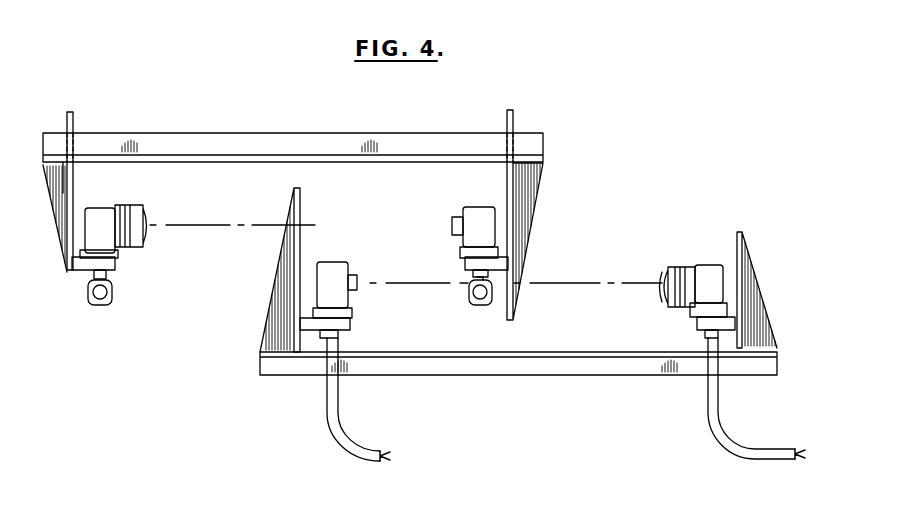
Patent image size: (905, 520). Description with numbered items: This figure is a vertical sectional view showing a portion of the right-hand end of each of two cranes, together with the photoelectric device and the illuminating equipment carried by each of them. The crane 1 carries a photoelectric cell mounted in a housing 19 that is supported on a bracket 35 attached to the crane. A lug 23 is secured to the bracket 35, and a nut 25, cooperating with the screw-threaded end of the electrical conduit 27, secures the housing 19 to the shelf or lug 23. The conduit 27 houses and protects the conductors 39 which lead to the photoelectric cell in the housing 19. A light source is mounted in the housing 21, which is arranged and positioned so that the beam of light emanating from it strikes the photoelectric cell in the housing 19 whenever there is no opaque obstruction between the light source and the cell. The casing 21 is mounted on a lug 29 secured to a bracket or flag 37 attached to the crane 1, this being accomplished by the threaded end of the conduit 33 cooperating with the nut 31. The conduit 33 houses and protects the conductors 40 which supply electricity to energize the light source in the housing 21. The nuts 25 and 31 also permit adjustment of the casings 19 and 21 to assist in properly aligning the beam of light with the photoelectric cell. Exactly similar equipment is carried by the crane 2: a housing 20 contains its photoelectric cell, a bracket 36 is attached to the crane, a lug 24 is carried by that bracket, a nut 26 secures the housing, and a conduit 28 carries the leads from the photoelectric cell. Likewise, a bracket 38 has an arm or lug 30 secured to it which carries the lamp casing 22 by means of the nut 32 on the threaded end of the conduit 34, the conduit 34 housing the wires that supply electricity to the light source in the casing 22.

The crane 1 is at (562, 375).
The crane 2 is at (320, 145).
The housing 19 is at (684, 268).
The housing of the photoelectric cell 20 is at (128, 250).
The housing 21 is at (328, 278).
The lamp casing 22 is at (475, 218).
The lug 23 is at (695, 325).
The lug 24 is at (78, 270).
The nut 25 is at (703, 333).
The nut 26 is at (96, 278).
The electrical conduit 27 is at (717, 410).
The conduit 28 is at (104, 299).
The lug 29 is at (348, 325).
The arm or lug 30 is at (468, 263).
The nut 31 is at (345, 334).
The nut 32 is at (465, 272).
The conduit 33 is at (338, 416).
The conduit 34 is at (478, 300).
The bracket 35 is at (742, 265).
The bracket 36 is at (73, 208).
The bracket or flag 37 is at (300, 229).
The bracket 38 is at (520, 283).
The conductors 39 is at (797, 452).
The conductors 40 is at (385, 458).